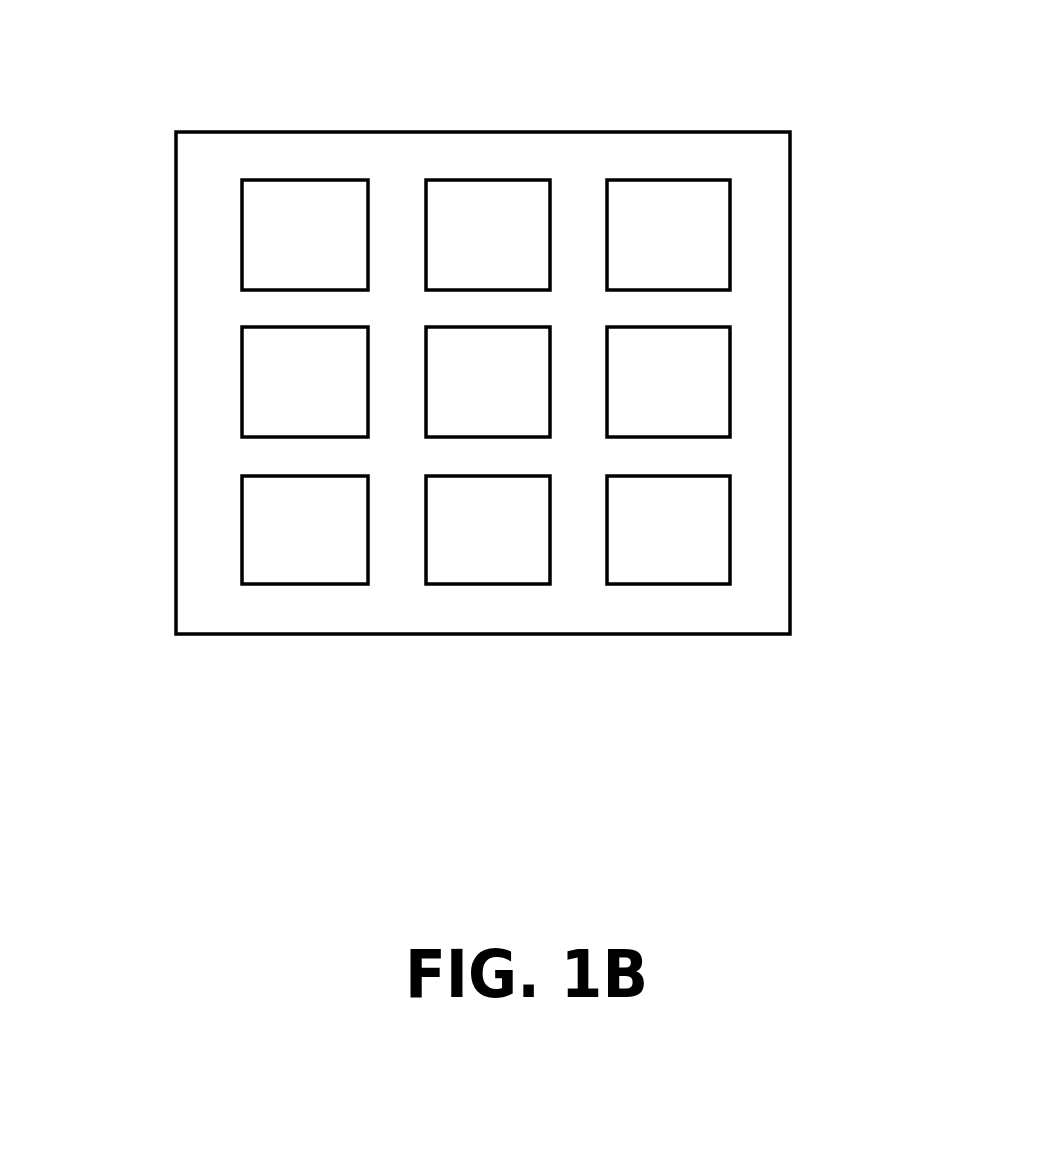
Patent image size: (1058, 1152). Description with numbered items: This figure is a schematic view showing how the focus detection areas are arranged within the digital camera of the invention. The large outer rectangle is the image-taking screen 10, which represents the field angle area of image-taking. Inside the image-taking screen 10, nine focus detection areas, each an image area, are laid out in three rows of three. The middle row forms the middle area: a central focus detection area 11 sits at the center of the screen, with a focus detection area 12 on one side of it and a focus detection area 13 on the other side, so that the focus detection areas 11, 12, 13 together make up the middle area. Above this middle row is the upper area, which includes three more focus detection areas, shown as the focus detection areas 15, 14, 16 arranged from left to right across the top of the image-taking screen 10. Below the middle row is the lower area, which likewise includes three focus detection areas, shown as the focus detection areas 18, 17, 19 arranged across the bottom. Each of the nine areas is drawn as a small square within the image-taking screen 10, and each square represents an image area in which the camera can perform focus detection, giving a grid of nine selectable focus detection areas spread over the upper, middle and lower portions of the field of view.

The image-taking screen 10 is at (733, 130).
The central focus detection area 11 is at (425, 370).
The focus detection area 12 is at (242, 380).
The focus detection area 13 is at (730, 378).
The focus detection area 14 is at (488, 180).
The focus detection area 15 is at (299, 180).
The focus detection area 16 is at (667, 180).
The focus detection area 17 is at (495, 585).
The focus detection area 18 is at (305, 585).
The focus detection area 19 is at (680, 582).